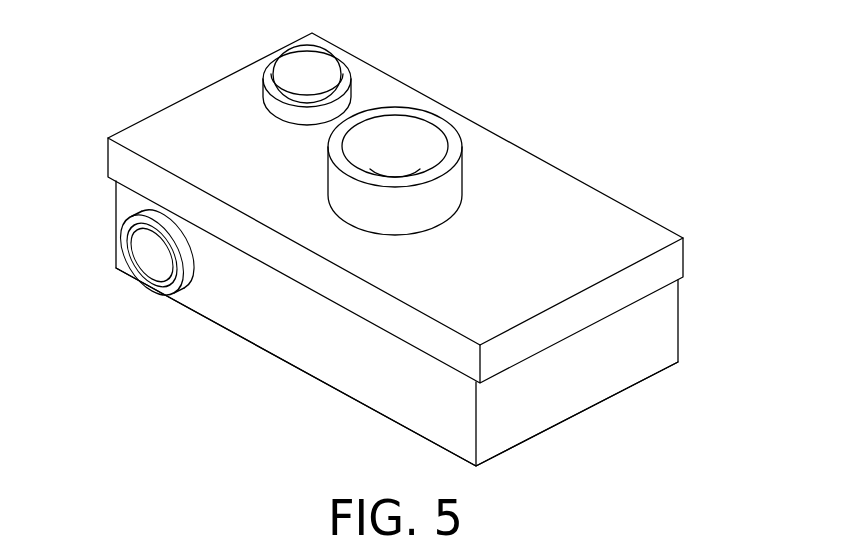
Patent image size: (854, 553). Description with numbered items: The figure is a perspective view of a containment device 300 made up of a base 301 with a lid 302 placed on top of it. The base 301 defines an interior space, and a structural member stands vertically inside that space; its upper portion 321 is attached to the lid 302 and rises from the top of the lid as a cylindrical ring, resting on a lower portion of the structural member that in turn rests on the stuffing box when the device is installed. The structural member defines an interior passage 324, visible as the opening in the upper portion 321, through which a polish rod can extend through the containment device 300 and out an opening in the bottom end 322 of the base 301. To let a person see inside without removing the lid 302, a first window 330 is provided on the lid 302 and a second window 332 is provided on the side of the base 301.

The containment device 300 is at (401, 237).
The base 301 is at (650, 334).
The lid 302 is at (607, 242).
The upper portion of the structural member 321 is at (460, 138).
The interior passage 324 is at (393, 132).
The first window 330 is at (315, 70).
The second window 332 is at (145, 242).
The bottom end of the base 322 is at (530, 437).